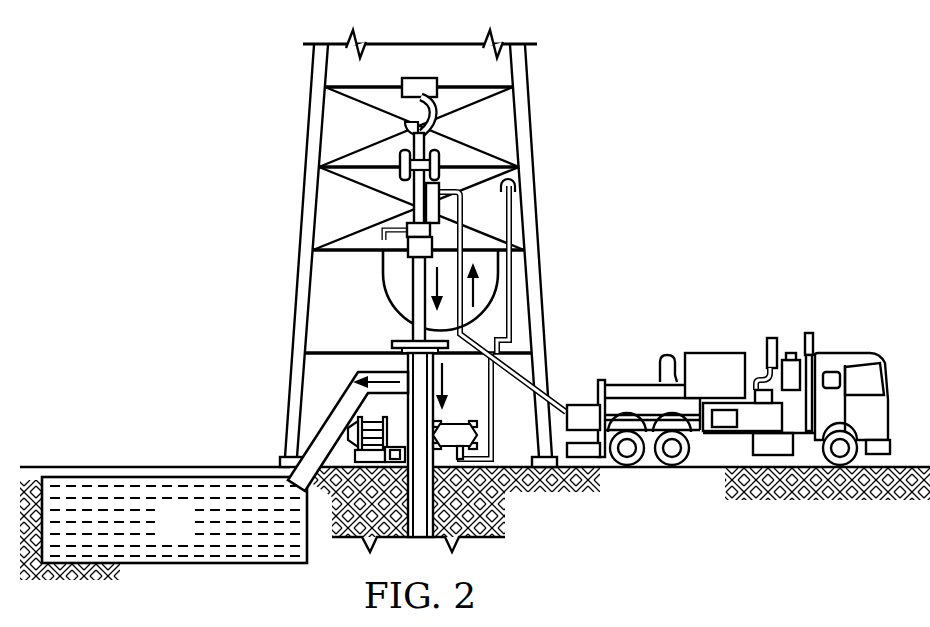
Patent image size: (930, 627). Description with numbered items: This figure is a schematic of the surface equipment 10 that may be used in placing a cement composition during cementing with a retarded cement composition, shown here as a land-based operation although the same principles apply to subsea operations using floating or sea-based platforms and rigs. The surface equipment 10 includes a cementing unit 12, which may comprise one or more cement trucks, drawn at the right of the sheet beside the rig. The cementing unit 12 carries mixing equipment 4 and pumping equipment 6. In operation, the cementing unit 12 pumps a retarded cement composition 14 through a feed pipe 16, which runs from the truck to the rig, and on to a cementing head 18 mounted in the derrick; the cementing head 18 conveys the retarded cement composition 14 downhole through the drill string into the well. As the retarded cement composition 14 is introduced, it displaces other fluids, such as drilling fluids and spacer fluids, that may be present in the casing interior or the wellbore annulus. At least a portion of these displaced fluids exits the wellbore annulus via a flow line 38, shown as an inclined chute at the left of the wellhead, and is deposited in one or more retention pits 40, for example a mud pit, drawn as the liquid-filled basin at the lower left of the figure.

The surface equipment 10 is at (106, 84).
The cementing unit 12 is at (728, 342).
The retarded cement composition 14 is at (436, 288).
The feed pipe 16 is at (523, 381).
The cementing head 18 is at (452, 154).
The mixing equipment 4 is at (718, 353).
The pumping equipment 6 is at (577, 406).
The flow line 38 is at (320, 421).
The retention pit 40 is at (190, 532).